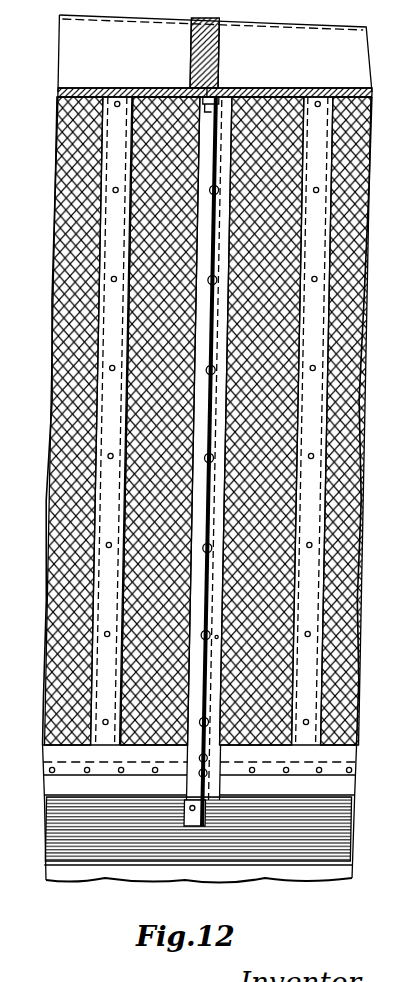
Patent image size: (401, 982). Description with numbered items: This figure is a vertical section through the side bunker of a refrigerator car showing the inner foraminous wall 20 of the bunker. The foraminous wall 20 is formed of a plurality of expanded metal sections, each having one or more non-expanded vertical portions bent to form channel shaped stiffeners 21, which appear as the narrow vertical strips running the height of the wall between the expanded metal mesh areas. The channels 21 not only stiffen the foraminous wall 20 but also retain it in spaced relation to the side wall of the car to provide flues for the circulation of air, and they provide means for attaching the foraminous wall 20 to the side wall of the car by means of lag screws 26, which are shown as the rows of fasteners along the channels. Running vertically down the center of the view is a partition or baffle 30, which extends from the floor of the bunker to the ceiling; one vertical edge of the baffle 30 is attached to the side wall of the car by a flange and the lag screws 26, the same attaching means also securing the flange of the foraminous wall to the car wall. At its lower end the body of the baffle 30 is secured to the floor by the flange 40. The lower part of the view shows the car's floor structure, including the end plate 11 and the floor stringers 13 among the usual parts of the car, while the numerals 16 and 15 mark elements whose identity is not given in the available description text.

The top header rail 16 is at (188, 56).
The channel shaped stiffener 21 is at (115, 137).
The foraminous wall 20 is at (62, 452).
The partition or baffle 30 is at (207, 571).
The top clip 15 is at (222, 100).
The lag screw 26 is at (105, 726).
The end plate 11 is at (0, 809).
The floor stringer 13 is at (0, 846).
The flange 40 is at (192, 818).